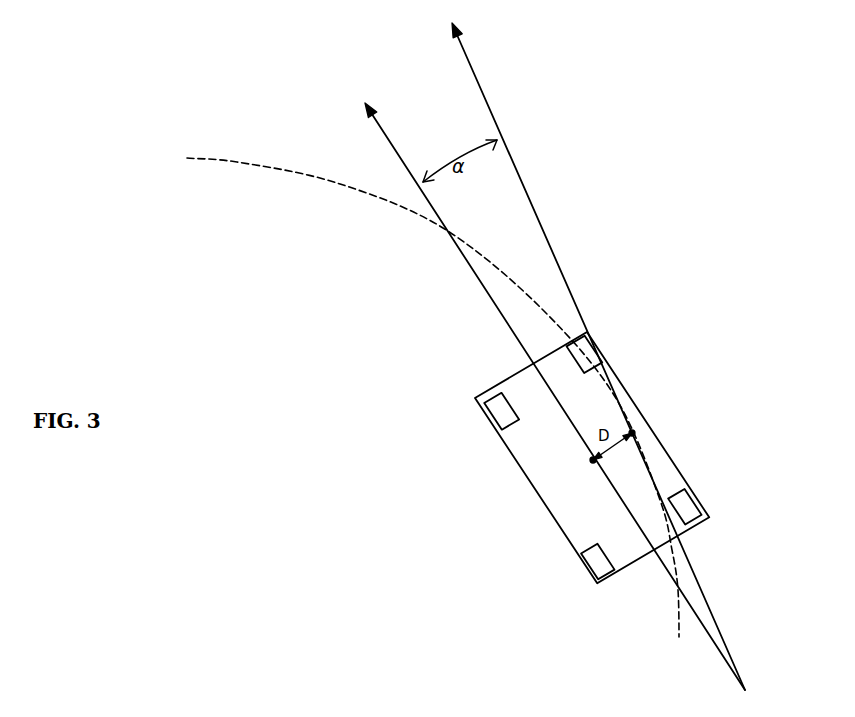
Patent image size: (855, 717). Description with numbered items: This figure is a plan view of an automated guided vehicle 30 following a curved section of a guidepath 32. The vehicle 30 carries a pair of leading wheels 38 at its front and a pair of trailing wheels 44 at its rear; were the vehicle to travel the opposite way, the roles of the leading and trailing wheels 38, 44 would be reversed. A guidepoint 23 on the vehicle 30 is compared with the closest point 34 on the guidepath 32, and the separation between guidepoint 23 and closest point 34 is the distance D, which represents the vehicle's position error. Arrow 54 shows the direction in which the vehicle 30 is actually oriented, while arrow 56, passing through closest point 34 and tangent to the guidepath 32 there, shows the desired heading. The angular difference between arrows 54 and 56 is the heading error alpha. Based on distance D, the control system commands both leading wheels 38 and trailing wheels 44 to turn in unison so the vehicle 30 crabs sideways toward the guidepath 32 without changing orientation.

The guidepoint 23 is at (593, 460).
The vehicle 30 is at (522, 485).
The guidepath 32 is at (235, 162).
The closest point 34 is at (633, 432).
The leading wheels 38 is at (587, 350).
The trailing wheels 44 is at (697, 503).
The arrow 54 is at (390, 137).
The arrow 56 is at (540, 225).